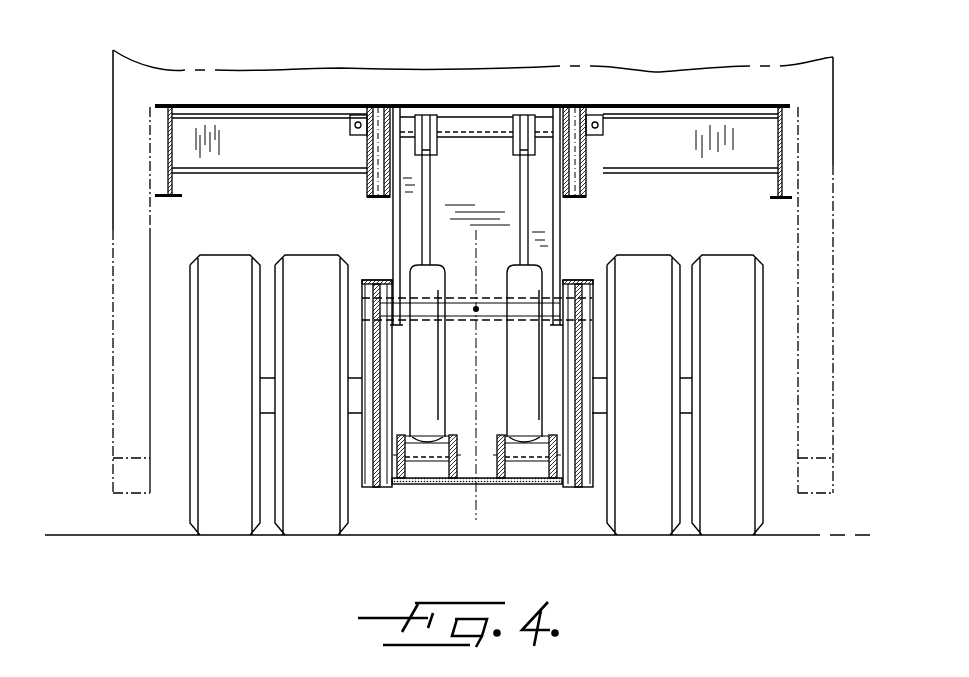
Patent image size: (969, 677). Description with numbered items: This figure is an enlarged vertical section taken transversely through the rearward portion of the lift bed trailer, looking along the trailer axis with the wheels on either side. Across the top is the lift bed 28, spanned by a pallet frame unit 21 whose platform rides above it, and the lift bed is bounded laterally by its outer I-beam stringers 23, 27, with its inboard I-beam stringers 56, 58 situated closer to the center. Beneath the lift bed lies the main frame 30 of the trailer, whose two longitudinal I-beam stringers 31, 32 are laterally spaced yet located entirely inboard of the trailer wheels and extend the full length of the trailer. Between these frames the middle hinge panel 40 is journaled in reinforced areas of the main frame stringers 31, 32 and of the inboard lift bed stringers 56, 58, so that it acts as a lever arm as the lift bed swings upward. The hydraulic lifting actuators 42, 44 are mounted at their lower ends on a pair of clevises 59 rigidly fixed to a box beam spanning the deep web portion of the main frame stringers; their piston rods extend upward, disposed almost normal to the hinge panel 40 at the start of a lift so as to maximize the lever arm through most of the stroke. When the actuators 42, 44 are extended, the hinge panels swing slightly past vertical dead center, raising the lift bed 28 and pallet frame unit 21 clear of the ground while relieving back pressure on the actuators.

The pallet frame unit 21 is at (760, 62).
The outer stringer of the lift bed 23 is at (168, 183).
The outer stringer of the lift bed 27 is at (785, 191).
The lift bed 28 is at (224, 180).
The main frame 30 is at (576, 281).
The longitudinal stringer 31 is at (376, 490).
The longitudinal stringer 32 is at (575, 488).
The middle hinge panel 40 is at (392, 232).
The hydraulic lifting actuator 42 is at (432, 281).
The hydraulic lifting actuator 44 is at (518, 281).
The inboard stringer of the lift bed 56 is at (366, 193).
The inboard stringer of the lift bed 58 is at (588, 193).
The clevis 59 is at (452, 472).